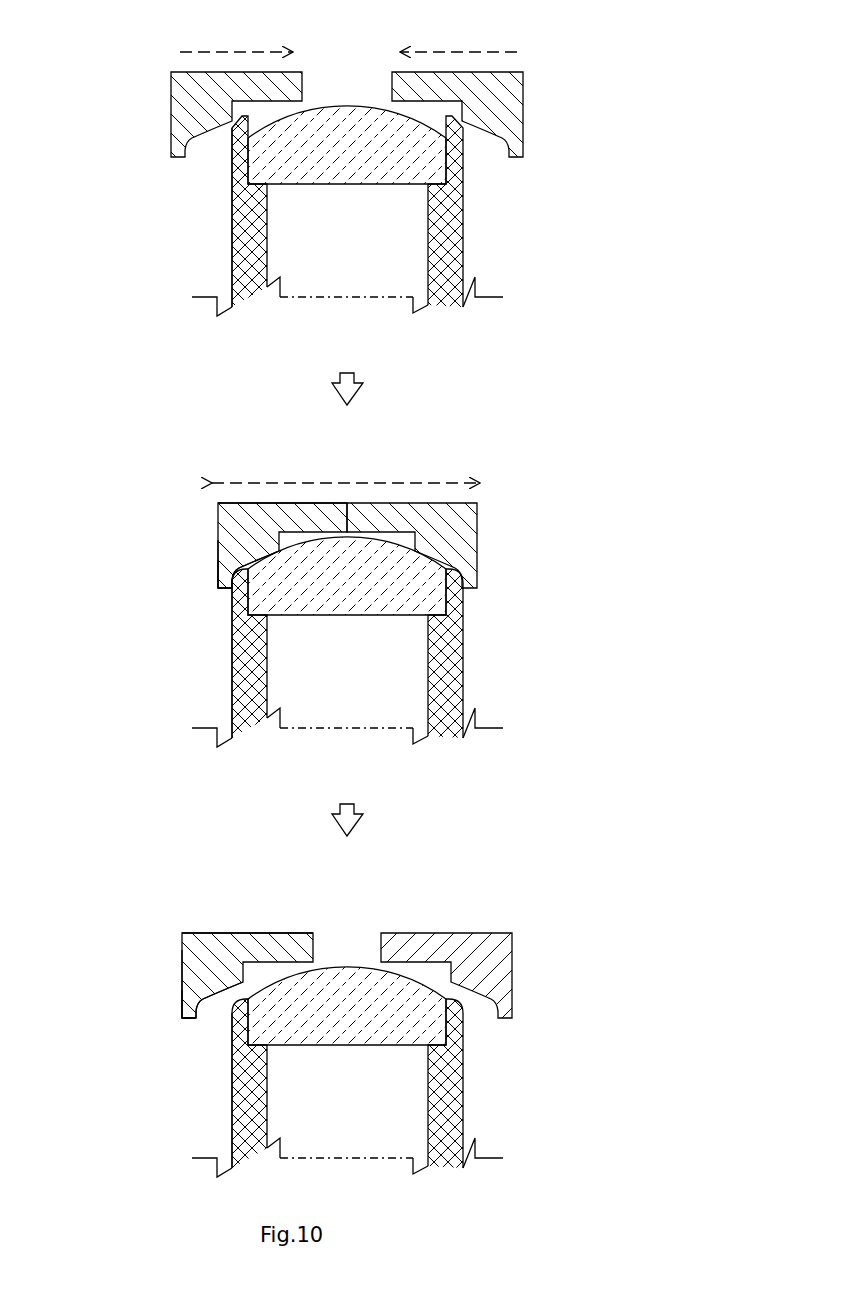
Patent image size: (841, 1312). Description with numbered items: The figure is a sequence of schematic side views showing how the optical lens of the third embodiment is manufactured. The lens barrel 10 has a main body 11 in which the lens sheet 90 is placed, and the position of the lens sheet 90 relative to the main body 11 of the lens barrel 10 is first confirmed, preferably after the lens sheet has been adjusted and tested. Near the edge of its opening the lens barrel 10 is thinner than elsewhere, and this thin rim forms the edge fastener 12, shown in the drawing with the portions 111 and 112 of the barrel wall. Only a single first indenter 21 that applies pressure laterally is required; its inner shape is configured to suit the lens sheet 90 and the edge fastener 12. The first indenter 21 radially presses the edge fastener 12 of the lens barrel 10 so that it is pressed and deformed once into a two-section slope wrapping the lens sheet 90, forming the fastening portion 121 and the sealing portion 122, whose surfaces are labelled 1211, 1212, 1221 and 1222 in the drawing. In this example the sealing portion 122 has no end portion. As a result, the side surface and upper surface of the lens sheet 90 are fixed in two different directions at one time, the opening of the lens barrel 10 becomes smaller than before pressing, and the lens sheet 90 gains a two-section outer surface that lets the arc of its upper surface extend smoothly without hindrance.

The lens barrel 10 is at (208, 295).
The main body 11 is at (210, 258).
The first wall portion 111 is at (232, 163).
The second wall portion 112 is at (231, 224).
The edge fastener 12 is at (130, 527).
The fastening portion 121 is at (216, 565).
The first abutting surface 1211 is at (217, 583).
The second abutting surface 1212 is at (217, 583).
The sealing portion 122 is at (148, 460).
The first inclined surface 1221 is at (217, 563).
The second inclined surface 1222 is at (243, 567).
The first indenter 21 is at (435, 72).
The lens sheet 90 is at (352, 186).